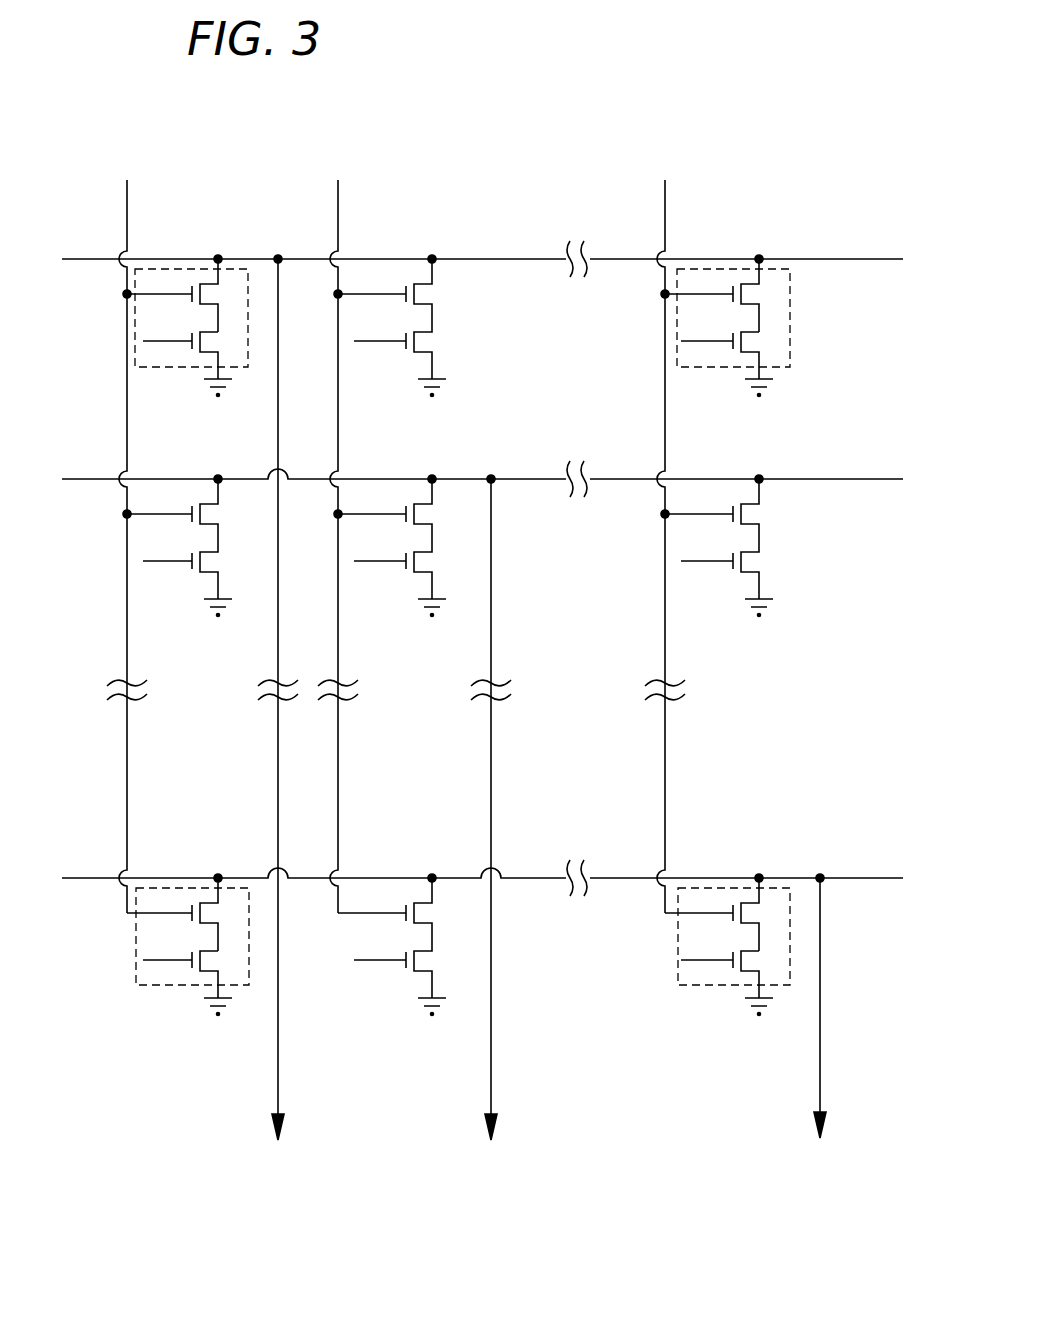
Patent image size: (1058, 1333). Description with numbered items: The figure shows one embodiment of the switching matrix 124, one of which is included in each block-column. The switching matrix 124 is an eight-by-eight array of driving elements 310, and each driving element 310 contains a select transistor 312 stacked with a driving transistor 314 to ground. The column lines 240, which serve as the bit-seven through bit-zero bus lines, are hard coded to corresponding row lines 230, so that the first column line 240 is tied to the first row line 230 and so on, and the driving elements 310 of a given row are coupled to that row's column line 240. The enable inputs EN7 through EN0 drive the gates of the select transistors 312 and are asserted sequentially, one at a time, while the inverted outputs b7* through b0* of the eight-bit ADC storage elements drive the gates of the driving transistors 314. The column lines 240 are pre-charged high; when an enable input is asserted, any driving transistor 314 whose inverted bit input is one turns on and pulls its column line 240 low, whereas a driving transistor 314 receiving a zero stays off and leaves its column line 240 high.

The switching matrix 124 is at (803, 112).
The row line 230 is at (810, 257).
The column line 240 is at (277, 1067).
The driving element 310 is at (172, 370).
The select transistor 312 is at (221, 293).
The driving transistor 314 is at (222, 345).